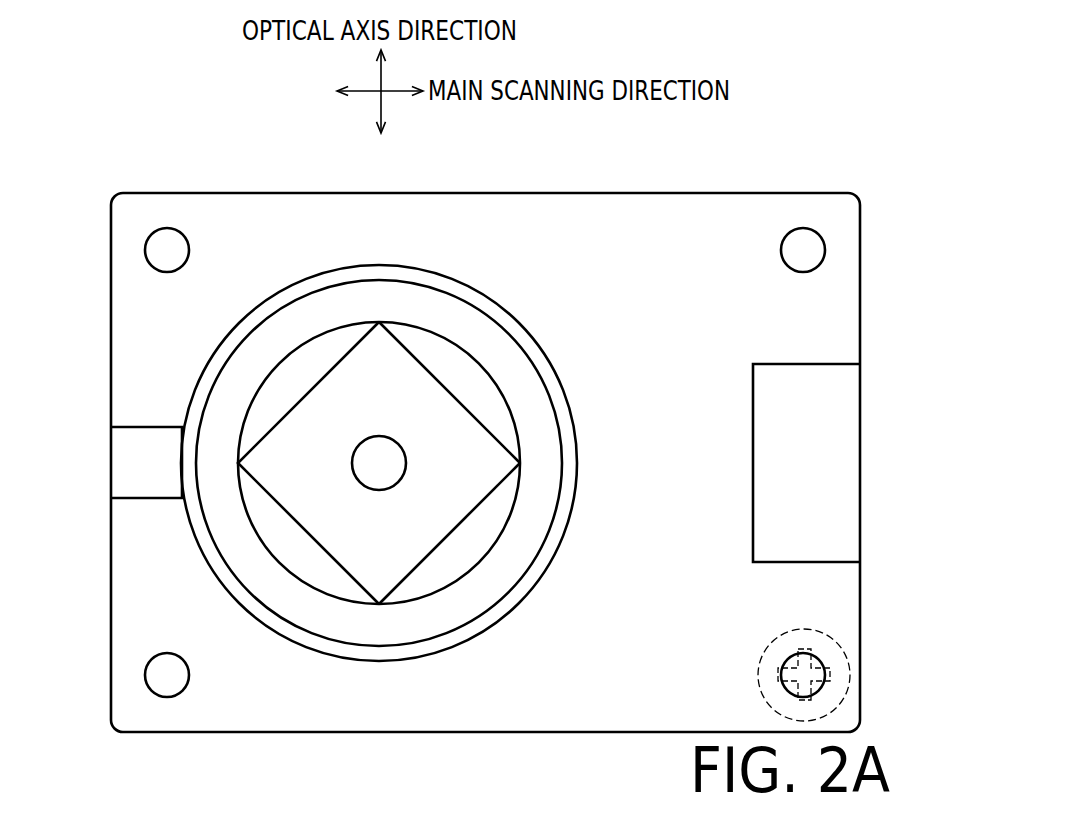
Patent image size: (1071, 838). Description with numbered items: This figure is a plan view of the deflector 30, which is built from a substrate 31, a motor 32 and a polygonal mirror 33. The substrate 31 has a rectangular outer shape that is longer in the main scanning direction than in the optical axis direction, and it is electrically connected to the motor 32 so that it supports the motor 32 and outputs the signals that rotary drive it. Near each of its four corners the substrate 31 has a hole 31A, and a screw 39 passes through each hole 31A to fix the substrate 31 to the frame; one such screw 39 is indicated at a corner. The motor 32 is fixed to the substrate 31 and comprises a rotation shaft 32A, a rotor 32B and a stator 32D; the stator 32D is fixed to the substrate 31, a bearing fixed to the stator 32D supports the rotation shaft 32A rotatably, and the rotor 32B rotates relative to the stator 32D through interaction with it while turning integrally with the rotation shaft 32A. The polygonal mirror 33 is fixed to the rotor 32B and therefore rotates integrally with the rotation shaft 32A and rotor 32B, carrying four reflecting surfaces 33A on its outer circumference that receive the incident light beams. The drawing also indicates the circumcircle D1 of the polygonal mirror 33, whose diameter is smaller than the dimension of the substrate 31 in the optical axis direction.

The deflector 30 is at (792, 143).
The substrate 31 is at (625, 232).
The hole 31A is at (155, 262).
The motor 32 is at (452, 278).
The rotation shaft 32A is at (392, 452).
The rotor 32B is at (540, 457).
The stator 32D is at (533, 348).
The polygonal mirror 33 is at (388, 355).
The reflecting surface 33A is at (457, 530).
The screw 39 is at (837, 643).
The circumcircle D1 is at (512, 515).